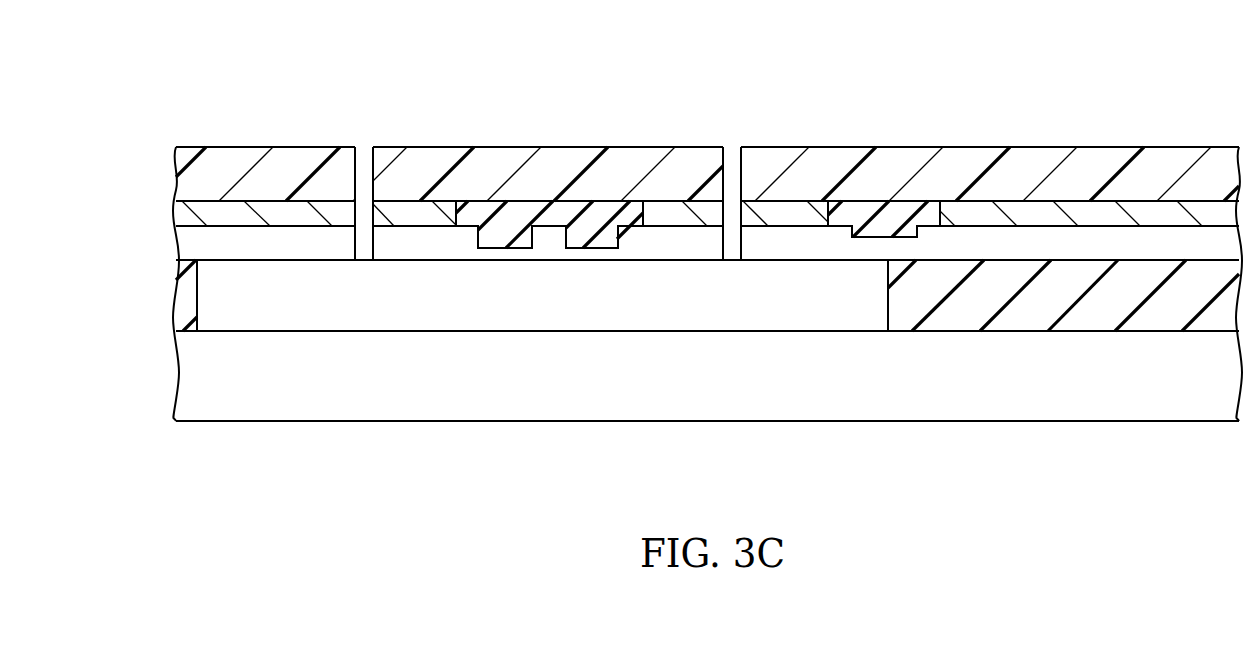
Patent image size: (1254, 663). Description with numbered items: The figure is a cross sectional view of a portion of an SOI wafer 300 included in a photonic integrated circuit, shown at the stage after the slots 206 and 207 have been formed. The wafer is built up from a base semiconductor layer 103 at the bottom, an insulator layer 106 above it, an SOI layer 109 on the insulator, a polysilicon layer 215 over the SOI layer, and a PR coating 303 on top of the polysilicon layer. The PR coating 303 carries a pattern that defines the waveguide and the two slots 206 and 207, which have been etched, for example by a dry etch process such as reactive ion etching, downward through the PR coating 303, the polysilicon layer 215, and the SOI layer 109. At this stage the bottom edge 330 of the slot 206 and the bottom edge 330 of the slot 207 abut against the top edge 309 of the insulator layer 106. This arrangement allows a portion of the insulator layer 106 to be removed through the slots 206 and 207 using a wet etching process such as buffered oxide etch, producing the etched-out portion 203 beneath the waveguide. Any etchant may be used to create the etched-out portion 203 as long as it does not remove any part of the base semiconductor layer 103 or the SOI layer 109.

The SOI wafer 300 is at (427, 85).
The base semiconductor layer 103 is at (177, 373).
The insulator layer 106 is at (177, 298).
The etched-out portion 203 is at (568, 312).
The top edge of the insulator layer 309 is at (177, 262).
The SOI layer 109 is at (177, 250).
The polysilicon layer 215 is at (177, 216).
The PR coating 303 is at (177, 165).
The slot 206 is at (365, 147).
The slot 207 is at (733, 147).
The bottom edge of the slot 330 is at (363, 262).